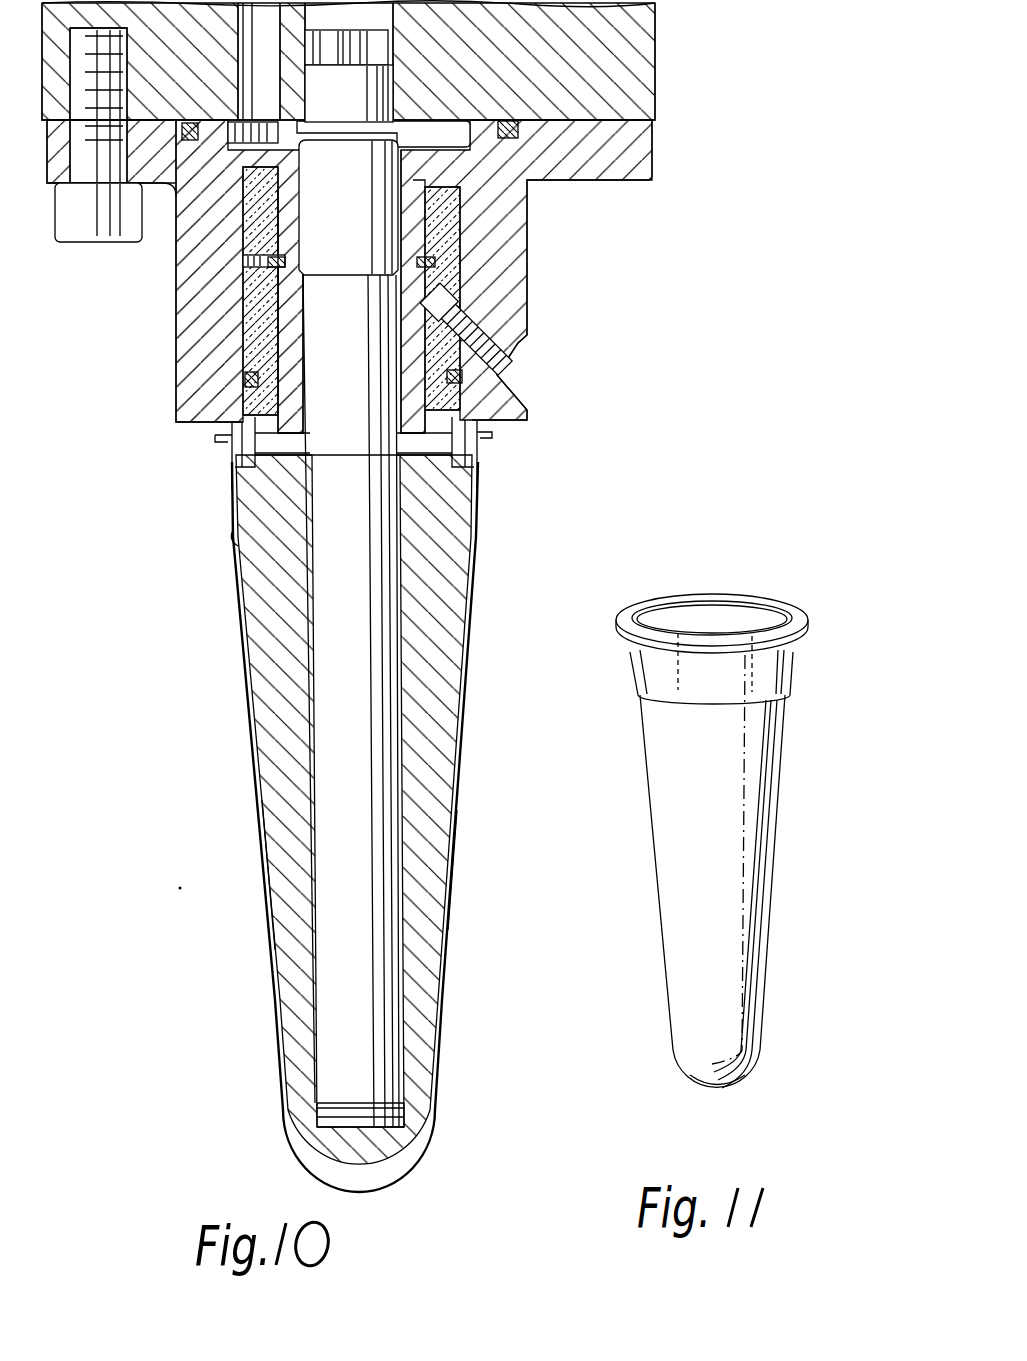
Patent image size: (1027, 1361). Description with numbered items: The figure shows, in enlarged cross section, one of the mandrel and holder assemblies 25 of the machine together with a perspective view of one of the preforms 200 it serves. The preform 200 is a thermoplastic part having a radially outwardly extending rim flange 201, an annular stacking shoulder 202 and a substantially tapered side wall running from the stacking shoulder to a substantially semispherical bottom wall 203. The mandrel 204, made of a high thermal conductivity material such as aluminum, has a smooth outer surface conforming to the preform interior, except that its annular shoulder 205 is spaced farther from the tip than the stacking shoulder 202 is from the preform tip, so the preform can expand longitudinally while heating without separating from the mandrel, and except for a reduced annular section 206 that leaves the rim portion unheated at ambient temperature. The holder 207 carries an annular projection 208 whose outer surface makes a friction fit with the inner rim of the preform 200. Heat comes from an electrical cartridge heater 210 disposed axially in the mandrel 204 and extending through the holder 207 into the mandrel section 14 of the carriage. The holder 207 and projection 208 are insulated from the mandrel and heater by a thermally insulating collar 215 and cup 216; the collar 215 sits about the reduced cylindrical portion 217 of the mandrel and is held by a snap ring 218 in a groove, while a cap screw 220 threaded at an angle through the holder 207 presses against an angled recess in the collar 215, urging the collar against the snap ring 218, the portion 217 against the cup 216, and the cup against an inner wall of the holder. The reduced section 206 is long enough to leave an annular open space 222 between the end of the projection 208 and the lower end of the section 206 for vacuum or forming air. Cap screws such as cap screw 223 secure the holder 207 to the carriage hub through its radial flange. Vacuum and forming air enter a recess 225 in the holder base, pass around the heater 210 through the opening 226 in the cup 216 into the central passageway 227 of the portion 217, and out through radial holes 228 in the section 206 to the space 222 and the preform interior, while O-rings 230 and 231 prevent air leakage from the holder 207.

In FIG. 10, the mandrel section 14 is at (658, 51).
In FIG. 10, the mandrel and holder assembly 25 is at (470, 663).
In FIG. 10, the preform 200 is at (456, 846).
In FIG. 11, the preform 200 is at (778, 901).
In FIG. 11, the rim flange 201 is at (781, 607).
In FIG. 11, the stacking shoulder 202 is at (669, 698).
In FIG. 11, the bottom wall 203 is at (722, 1092).
In FIG. 10, the mandrel 204 is at (281, 791).
In FIG. 10, the annular shoulder 205 is at (243, 536).
In FIG. 10, the reduced annular section 206 is at (240, 426).
In FIG. 10, the holder 207 is at (515, 276).
In FIG. 10, the annular projection 208 is at (462, 470).
In FIG. 10, the electrical cartridge heater 210 is at (313, 643).
In FIG. 10, the collar 215 is at (246, 292).
In FIG. 10, the cup 216 is at (243, 190).
In FIG. 10, the reduced cylindrical portion 217 is at (284, 327).
In FIG. 10, the snap ring 218 is at (440, 260).
In FIG. 10, the cap screw 220 is at (512, 354).
In FIG. 10, the annular open space 222 is at (241, 468).
In FIG. 10, the cap screw 223 is at (72, 243).
In FIG. 10, the recess 225 is at (436, 128).
In FIG. 10, the opening 226 is at (298, 173).
In FIG. 10, the central passageway 227 is at (304, 337).
In FIG. 10, the radial holes 228 is at (269, 451).
In FIG. 10, the O-ring 230 is at (510, 121).
In FIG. 10, the O-ring 231 is at (250, 378).